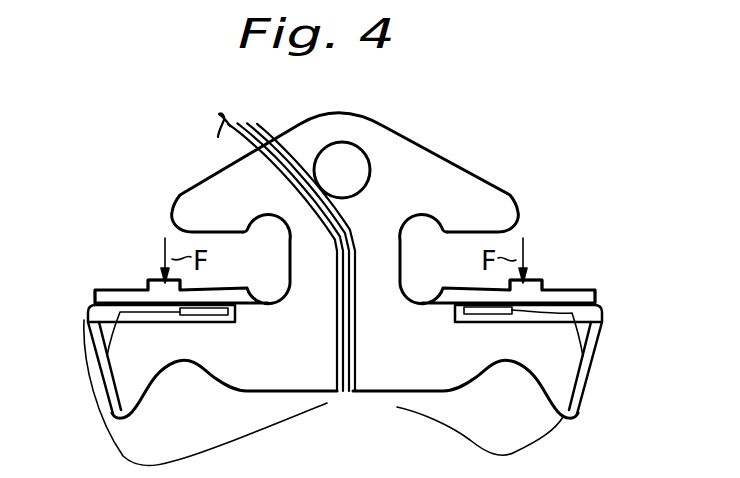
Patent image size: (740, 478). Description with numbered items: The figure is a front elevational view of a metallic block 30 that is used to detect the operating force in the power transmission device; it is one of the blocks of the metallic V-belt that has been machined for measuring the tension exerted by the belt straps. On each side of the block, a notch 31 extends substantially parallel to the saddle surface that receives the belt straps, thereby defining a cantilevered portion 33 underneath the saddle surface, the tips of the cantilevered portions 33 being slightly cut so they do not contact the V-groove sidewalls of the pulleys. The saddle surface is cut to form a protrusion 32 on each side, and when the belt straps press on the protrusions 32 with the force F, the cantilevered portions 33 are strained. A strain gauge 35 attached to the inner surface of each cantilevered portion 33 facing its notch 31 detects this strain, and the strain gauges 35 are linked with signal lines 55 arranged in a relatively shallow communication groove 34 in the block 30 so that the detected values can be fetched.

The metallic block 30 is at (511, 154).
The notch 31 is at (113, 354).
The protrusion 32 is at (158, 283).
The cantilevered portion 33 is at (95, 296).
The communication groove 34 is at (357, 332).
The strain gauge 35 is at (200, 315).
The signal line 55 is at (397, 405).